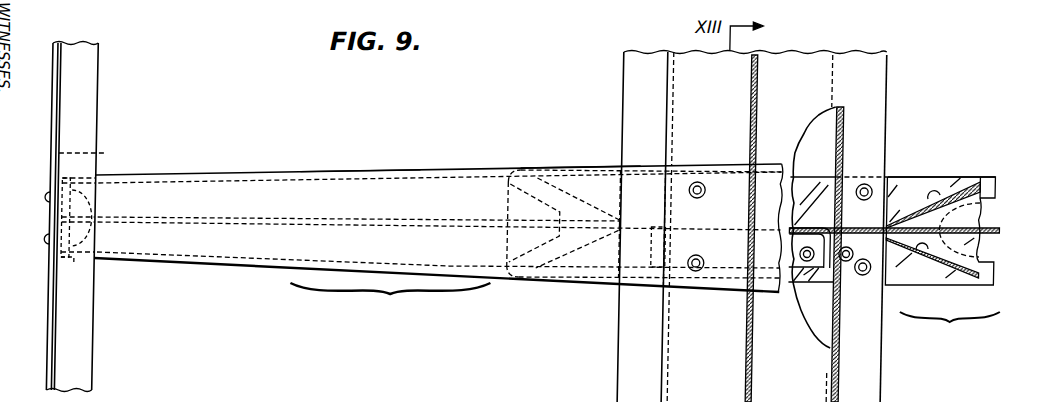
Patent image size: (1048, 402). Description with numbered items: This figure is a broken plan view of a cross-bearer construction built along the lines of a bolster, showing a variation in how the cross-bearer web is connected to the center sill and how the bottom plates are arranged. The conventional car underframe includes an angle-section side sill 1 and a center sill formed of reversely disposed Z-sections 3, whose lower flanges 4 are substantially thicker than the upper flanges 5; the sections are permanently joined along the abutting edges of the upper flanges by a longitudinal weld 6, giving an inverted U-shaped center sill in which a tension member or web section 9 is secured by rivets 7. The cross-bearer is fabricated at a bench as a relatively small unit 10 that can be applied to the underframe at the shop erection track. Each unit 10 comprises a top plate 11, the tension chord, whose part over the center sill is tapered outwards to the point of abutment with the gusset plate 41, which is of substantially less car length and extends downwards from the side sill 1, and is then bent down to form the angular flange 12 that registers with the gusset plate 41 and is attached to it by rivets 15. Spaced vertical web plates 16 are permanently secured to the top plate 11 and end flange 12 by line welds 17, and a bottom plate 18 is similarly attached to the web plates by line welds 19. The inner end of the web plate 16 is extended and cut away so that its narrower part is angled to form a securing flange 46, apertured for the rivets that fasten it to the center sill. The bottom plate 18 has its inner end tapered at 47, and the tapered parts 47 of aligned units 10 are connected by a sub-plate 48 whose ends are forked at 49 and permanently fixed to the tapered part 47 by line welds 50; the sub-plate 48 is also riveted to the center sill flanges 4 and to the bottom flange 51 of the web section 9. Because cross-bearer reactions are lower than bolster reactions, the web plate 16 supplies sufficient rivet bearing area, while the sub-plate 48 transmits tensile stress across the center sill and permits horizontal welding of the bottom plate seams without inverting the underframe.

The side sill 1 is at (85, 79).
The Z-section 3 is at (681, 52).
The lower flange 4 is at (629, 82).
The upper flange 5 is at (737, 227).
The longitudinal weld 6 is at (748, 80).
The rivets 7 is at (697, 254).
The web section 9 is at (800, 227).
The unit 10 is at (548, 253).
The top plate 11 is at (723, 182).
The angular flange 12 is at (79, 262).
The rivets 15 is at (47, 238).
The web plate 16 is at (378, 217).
The line welds 17 is at (110, 235).
The bottom plate 18 is at (258, 266).
The line welds 19 is at (852, 253).
The gusset plate 41 is at (93, 155).
The securing flange 46 is at (655, 270).
The tapered part 47 is at (342, 169).
The sub-plate 48 is at (712, 285).
The forked ends 49 is at (535, 206).
The line welds 50 is at (931, 196).
The bottom flange 51 is at (797, 251).